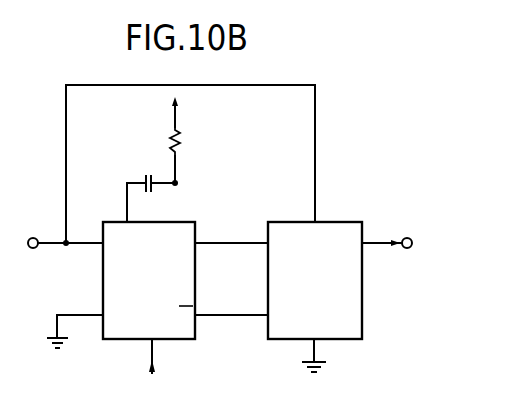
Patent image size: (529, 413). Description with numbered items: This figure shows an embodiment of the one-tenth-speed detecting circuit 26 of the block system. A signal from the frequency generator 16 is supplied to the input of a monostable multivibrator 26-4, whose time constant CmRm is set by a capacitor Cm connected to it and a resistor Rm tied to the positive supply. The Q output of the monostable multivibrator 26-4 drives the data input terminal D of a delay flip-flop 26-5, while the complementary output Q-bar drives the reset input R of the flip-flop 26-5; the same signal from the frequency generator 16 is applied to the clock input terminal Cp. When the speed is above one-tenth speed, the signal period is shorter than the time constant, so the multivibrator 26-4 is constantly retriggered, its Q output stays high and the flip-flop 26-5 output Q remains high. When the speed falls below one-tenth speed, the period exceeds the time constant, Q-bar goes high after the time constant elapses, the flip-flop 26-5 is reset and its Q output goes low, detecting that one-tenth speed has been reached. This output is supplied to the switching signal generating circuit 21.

The 1/10-speed detecting circuit 26 is at (89, 73).
The monostable multivibrator 26-4 is at (190, 220).
The delay flip-flop 26-5 is at (340, 220).
The frequency generator 16 is at (37, 270).
The switching signal generating circuit 21 is at (217, 244).